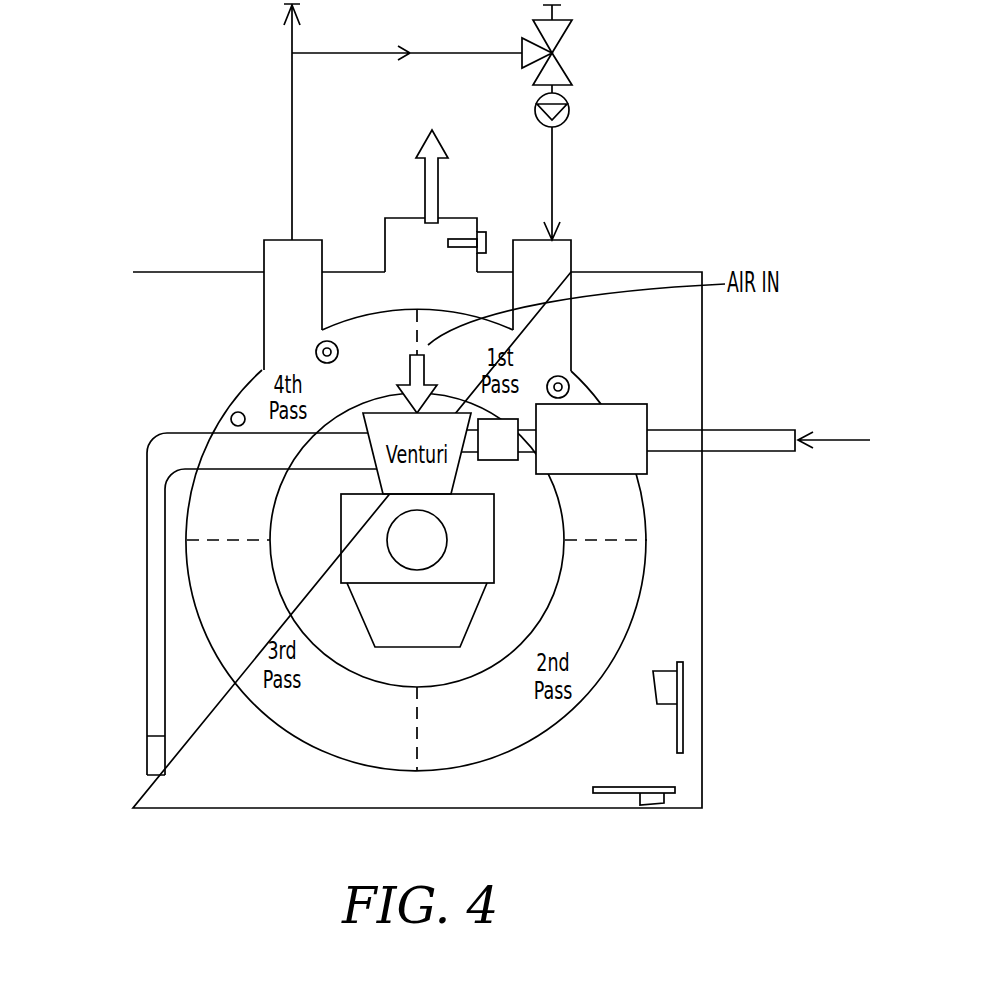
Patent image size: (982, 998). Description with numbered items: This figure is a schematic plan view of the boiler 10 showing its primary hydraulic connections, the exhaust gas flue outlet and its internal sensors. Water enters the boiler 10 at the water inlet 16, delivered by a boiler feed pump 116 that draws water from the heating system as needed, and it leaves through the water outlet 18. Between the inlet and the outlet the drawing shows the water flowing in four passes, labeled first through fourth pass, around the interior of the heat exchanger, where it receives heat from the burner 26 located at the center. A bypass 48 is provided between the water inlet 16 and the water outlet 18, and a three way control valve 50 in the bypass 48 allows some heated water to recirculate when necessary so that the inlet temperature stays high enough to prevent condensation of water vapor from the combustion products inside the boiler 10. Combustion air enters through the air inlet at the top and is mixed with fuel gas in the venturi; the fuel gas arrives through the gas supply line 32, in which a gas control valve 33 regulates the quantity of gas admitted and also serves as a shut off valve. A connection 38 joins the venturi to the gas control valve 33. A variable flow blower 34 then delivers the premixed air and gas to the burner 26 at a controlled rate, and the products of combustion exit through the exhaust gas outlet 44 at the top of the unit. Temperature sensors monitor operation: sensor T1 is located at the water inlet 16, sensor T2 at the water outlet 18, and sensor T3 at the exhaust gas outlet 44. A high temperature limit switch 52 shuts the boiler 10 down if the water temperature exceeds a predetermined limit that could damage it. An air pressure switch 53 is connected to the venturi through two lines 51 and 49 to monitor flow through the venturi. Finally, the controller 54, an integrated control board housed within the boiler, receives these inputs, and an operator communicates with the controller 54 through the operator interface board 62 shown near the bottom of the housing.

The boiler 10 is at (732, 147).
The water inlet 16 is at (568, 240).
The water outlet 18 is at (302, 240).
The burner 26 is at (447, 540).
The gas supply line 32 is at (750, 443).
The gas control valve 33 is at (632, 416).
The variable flow blower 34 is at (478, 515).
The gas/air mixer connection 38 is at (490, 460).
The exhaust gas outlet 44 is at (403, 250).
The bypass 48 is at (352, 53).
The line 49 is at (165, 658).
The three way control valve 50 is at (566, 42).
The line 51 is at (147, 608).
The high temperature limit switch 52 is at (231, 416).
The air pressure switch 53 is at (155, 757).
The controller 54 is at (683, 715).
The operator interface board 62 is at (613, 793).
The boiler feed pump 116 is at (570, 117).
The temperature sensor T1 is at (569, 380).
The temperature sensor T2 is at (318, 345).
The temperature sensor T3 is at (483, 232).